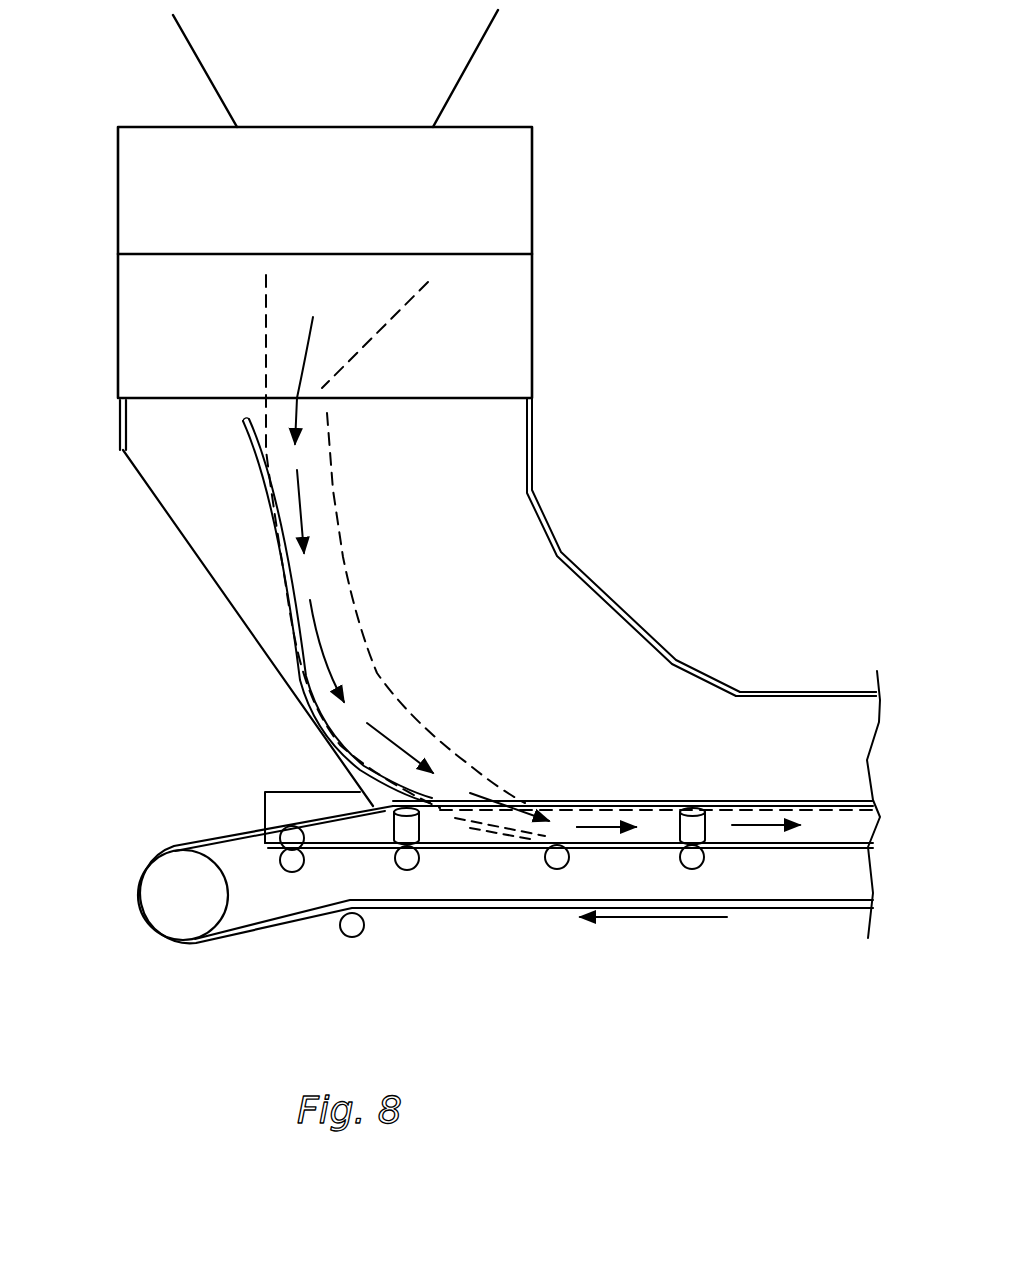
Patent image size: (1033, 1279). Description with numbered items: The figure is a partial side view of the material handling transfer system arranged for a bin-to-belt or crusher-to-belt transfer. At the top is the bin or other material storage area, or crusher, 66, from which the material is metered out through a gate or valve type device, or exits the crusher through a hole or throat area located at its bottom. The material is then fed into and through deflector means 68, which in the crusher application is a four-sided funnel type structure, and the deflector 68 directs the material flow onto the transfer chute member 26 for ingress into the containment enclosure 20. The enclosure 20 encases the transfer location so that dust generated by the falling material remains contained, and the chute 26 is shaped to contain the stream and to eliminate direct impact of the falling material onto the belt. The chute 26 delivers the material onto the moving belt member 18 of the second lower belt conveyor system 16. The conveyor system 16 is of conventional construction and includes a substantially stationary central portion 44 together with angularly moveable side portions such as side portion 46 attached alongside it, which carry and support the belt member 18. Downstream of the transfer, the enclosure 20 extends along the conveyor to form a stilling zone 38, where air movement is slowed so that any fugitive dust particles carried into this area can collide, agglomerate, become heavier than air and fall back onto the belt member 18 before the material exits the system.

The second lower belt conveyor system 16 is at (203, 950).
The moving belt member 18 is at (212, 842).
The containment enclosure 20 is at (226, 613).
The transfer chute member 26 is at (262, 520).
The stilling zone 38 is at (787, 682).
The substantially stationary central portion 44 is at (707, 862).
The angularly moveable side portion 46 is at (423, 824).
The bin or material storage area (crusher) 66 is at (542, 181).
The deflector means 68 is at (378, 345).